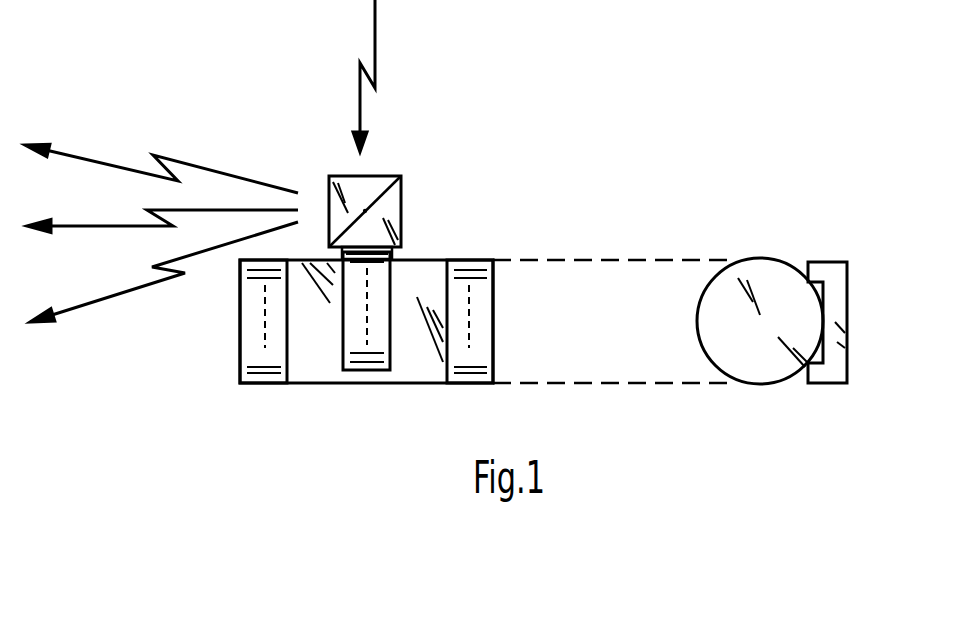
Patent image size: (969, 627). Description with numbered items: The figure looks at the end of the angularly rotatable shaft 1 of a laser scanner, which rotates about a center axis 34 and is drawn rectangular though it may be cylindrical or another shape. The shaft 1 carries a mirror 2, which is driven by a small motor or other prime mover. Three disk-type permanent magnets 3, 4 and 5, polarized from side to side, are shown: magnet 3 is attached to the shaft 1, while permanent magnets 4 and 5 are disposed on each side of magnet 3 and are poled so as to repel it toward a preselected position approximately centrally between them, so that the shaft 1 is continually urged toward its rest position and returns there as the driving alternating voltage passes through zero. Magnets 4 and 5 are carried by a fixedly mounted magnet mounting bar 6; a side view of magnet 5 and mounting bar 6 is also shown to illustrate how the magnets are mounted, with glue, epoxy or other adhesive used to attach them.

The angularly rotatable shaft 1 is at (373, 182).
The mirror 2 is at (370, 200).
The center axis 34 is at (363, 211).
The disk-type permanent magnet 3 is at (393, 352).
The permanent magnet 4 is at (287, 357).
The permanent magnet 5 is at (493, 350).
The magnet mounting bar 6 is at (415, 268).